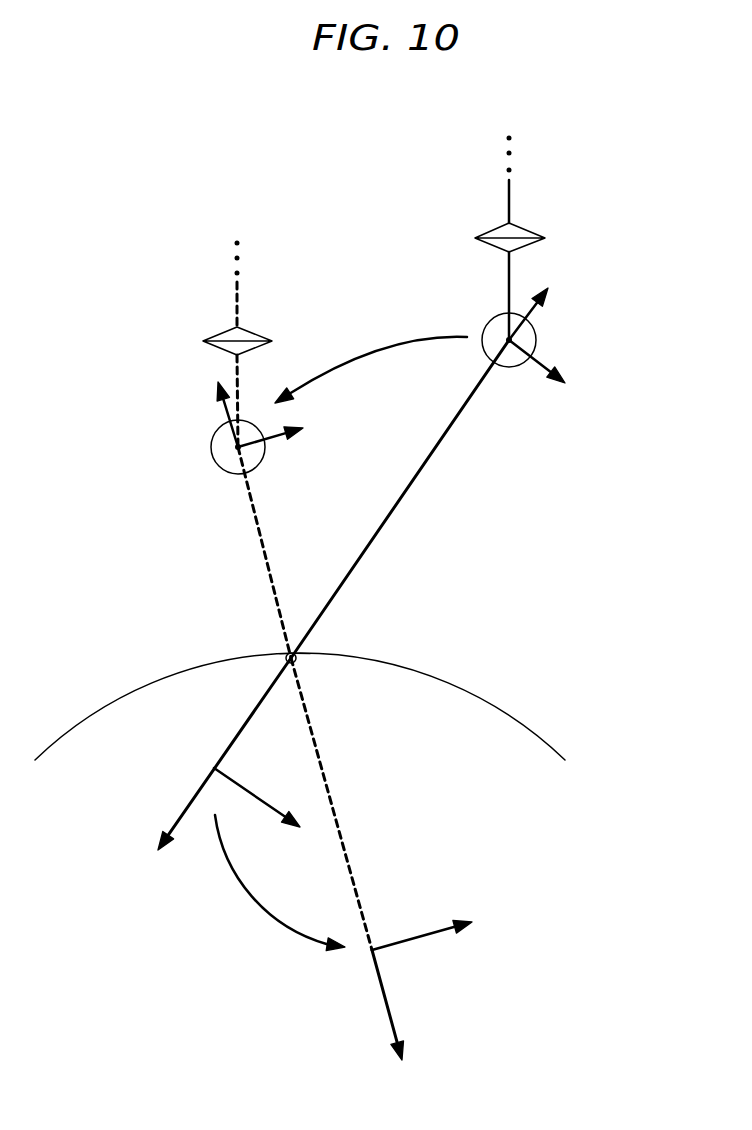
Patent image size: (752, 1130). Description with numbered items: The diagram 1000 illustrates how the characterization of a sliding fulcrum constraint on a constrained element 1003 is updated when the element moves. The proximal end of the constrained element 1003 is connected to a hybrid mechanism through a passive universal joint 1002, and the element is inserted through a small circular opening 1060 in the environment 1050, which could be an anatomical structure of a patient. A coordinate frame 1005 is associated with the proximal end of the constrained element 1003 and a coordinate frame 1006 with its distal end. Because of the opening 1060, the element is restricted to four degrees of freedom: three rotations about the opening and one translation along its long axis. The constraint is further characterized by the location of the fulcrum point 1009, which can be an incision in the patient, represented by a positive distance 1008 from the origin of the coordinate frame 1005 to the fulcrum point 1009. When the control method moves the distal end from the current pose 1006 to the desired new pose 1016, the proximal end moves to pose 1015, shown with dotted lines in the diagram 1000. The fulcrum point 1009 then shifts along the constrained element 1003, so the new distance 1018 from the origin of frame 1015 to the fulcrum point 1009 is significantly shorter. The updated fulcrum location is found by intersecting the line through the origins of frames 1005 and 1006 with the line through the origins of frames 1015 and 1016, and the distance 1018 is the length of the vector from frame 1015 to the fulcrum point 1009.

The optical system 1000 is at (660, 113).
The passive universal joint 1002 is at (473, 180).
The coordinate frame 1005 is at (530, 340).
The pose 1015 is at (243, 423).
The new distance 1018 is at (263, 662).
The positive distance 1008 is at (521, 366).
The fulcrum point 1009 is at (292, 653).
The constrained element 1003 is at (267, 690).
The small circular opening 1060 is at (298, 666).
The environment 1050 is at (510, 690).
The coordinate frame 1006 is at (210, 785).
The new pose 1016 is at (387, 967).